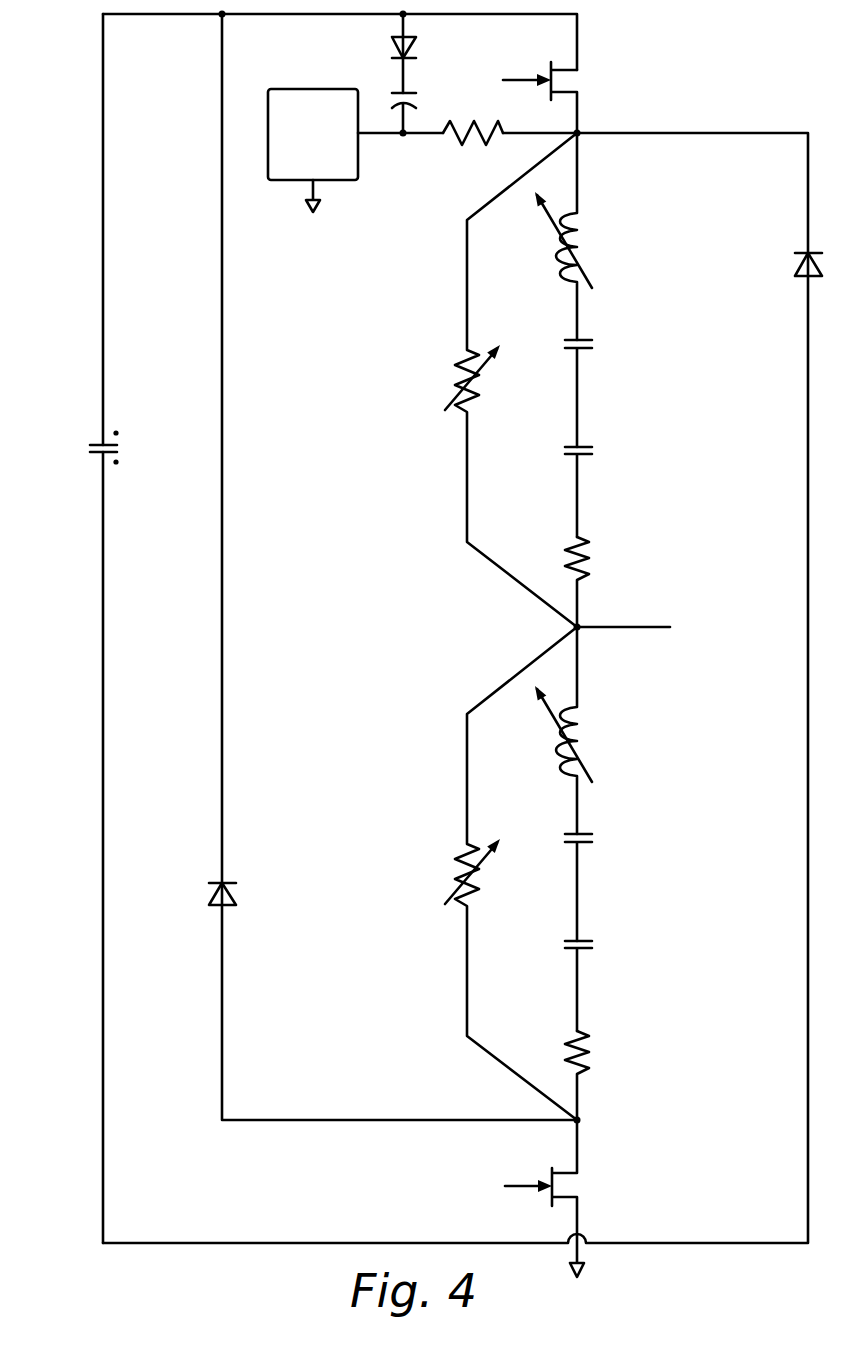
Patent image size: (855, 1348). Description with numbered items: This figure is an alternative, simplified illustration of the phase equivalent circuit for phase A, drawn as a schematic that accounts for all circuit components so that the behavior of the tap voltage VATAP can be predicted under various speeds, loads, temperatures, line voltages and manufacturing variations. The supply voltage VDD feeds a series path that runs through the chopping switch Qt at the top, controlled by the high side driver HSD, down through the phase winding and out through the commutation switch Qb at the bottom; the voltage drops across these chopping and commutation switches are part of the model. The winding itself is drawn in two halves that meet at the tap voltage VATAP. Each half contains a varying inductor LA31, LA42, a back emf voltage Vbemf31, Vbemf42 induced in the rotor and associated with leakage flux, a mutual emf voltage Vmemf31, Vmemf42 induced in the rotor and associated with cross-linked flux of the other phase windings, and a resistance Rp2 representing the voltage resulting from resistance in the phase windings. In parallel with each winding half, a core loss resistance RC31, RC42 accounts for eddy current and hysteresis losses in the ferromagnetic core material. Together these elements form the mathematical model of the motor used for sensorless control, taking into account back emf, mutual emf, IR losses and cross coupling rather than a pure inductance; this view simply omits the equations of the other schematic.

The supply voltage VDD is at (76, 439).
The high side driver HSD is at (313, 150).
The chopping switch Qt is at (562, 97).
The commutation switch Qb is at (566, 1198).
The varying inductor LA31 is at (597, 236).
The back emf voltage Vbemf31 is at (626, 391).
The mutual emf voltage Vmemf31 is at (626, 488).
The phase winding resistance Rp2 is at (638, 1094).
The tap voltage VATAP is at (657, 633).
The core loss resistance RC31 is at (479, 380).
The varying inductor LA42 is at (597, 730).
The back emf voltage Vbemf42 is at (626, 885).
The mutual emf voltage Vmemf42 is at (626, 982).
The core loss resistance RC42 is at (479, 873).